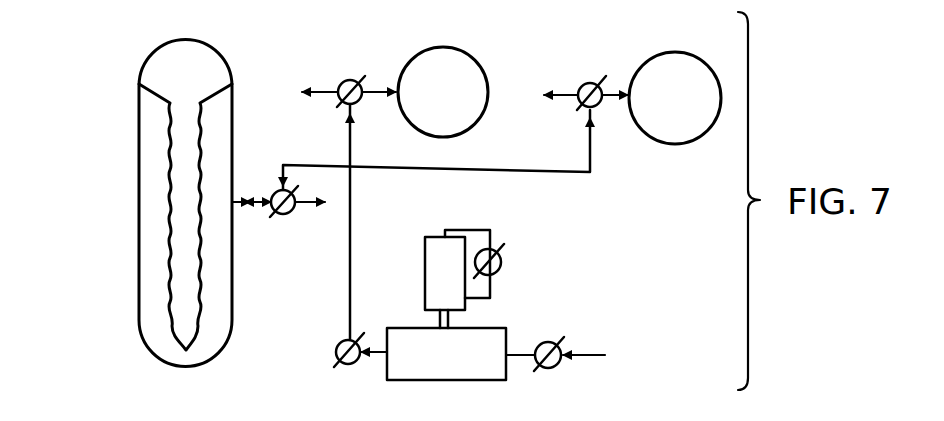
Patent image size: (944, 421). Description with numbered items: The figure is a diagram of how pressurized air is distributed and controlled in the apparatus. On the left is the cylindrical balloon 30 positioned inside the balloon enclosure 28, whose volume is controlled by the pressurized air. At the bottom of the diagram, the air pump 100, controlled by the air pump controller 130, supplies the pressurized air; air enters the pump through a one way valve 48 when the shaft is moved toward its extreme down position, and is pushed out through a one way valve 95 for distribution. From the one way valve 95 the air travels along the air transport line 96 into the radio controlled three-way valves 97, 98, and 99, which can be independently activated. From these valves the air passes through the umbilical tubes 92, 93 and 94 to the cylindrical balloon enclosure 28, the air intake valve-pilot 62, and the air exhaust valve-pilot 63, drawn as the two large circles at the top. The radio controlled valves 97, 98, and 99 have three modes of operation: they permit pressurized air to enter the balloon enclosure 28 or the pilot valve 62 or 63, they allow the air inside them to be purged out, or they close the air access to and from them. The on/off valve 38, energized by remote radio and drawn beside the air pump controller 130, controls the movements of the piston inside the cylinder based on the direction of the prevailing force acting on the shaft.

The balloon enclosure 28 is at (150, 190).
The cylindrical balloon 30 is at (170, 65).
The on/off valve 38 is at (503, 257).
The one way valve 48 is at (565, 346).
The air intake valve-pilot 62 is at (680, 52).
The air exhaust valve-pilot 63 is at (470, 52).
The umbilical tube 92 is at (620, 86).
The umbilical tube 93 is at (388, 88).
The umbilical tube 94 is at (248, 200).
The one way valve 95 is at (336, 352).
The air transport line 96 is at (362, 208).
The radio controlled 3-way valve 97 is at (580, 82).
The radio controlled 3-way valve 98 is at (346, 78).
The radio controlled 3-way valve 99 is at (283, 214).
The air pump 100 is at (490, 328).
The air pump controller 130 is at (431, 237).